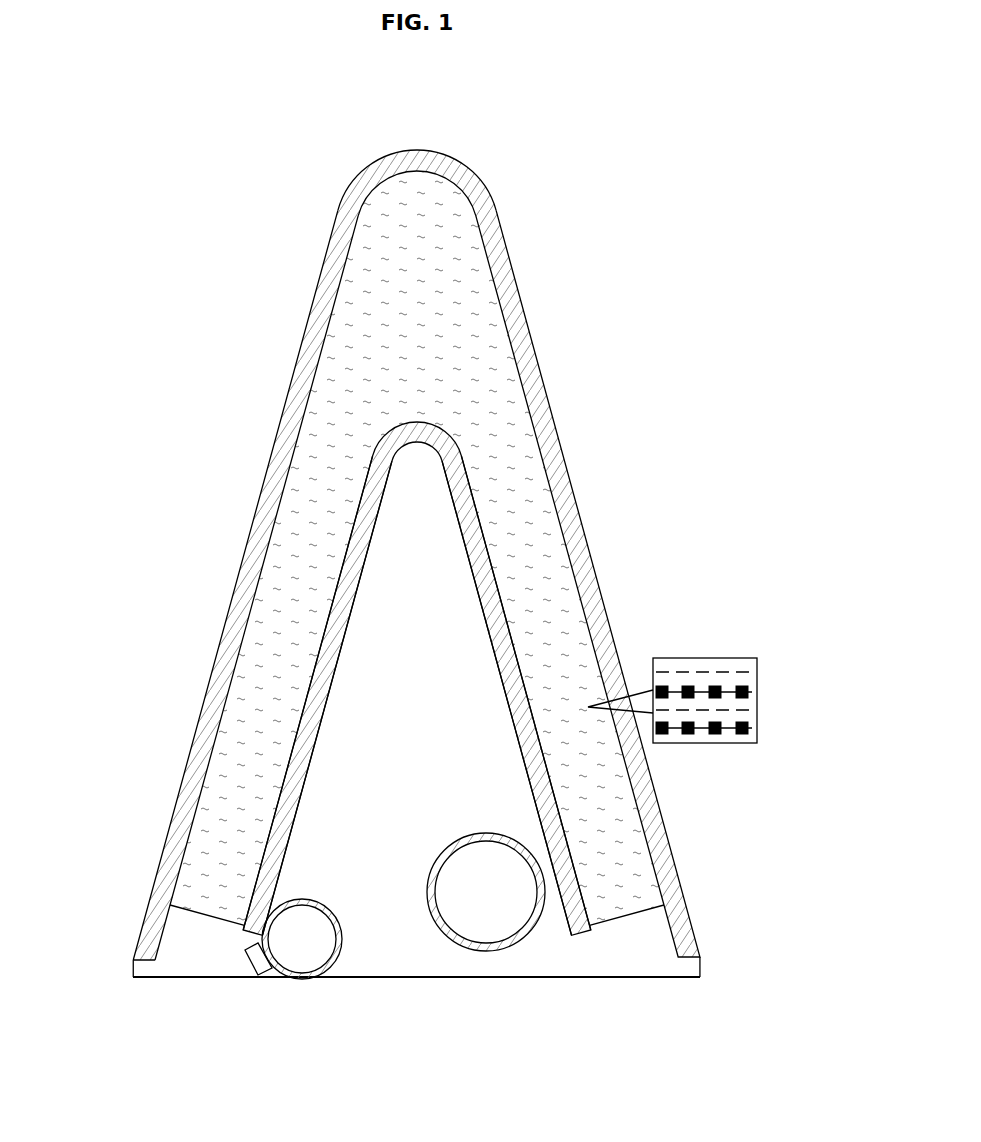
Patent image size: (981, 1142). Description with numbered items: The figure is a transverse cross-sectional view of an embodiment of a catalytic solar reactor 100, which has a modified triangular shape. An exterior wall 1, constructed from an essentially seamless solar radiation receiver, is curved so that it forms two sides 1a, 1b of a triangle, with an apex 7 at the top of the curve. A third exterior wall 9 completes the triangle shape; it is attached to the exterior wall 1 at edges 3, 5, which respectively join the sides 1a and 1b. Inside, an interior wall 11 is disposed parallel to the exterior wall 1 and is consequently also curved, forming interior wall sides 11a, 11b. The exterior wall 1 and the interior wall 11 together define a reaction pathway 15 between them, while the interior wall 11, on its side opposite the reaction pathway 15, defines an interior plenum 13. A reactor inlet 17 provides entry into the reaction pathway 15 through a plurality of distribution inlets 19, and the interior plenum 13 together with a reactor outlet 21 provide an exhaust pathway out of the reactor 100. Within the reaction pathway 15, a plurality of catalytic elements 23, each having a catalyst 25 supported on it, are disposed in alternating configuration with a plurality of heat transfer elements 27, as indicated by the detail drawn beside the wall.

The catalytic solar reactor 100 is at (556, 180).
The exterior wall 1 is at (416, 537).
The side of exterior wall 1a is at (239, 567).
The side of exterior wall 1b is at (577, 507).
The apex 7 is at (415, 150).
The interior wall 11 is at (417, 678).
The side of interior wall 11a is at (348, 625).
The side of interior wall 11b is at (502, 692).
The interior plenum 13 is at (383, 883).
The reaction pathway 15 is at (240, 787).
The reactor inlet 17 is at (303, 955).
The distribution inlets 19 is at (250, 962).
The reactor outlet 21 is at (488, 932).
The catalytic elements 23 is at (750, 730).
The catalyst 25 is at (688, 735).
The heat transfer elements 27 is at (680, 672).
The edge 3 is at (133, 977).
The edge 5 is at (700, 977).
The third exterior wall 9 is at (473, 978).